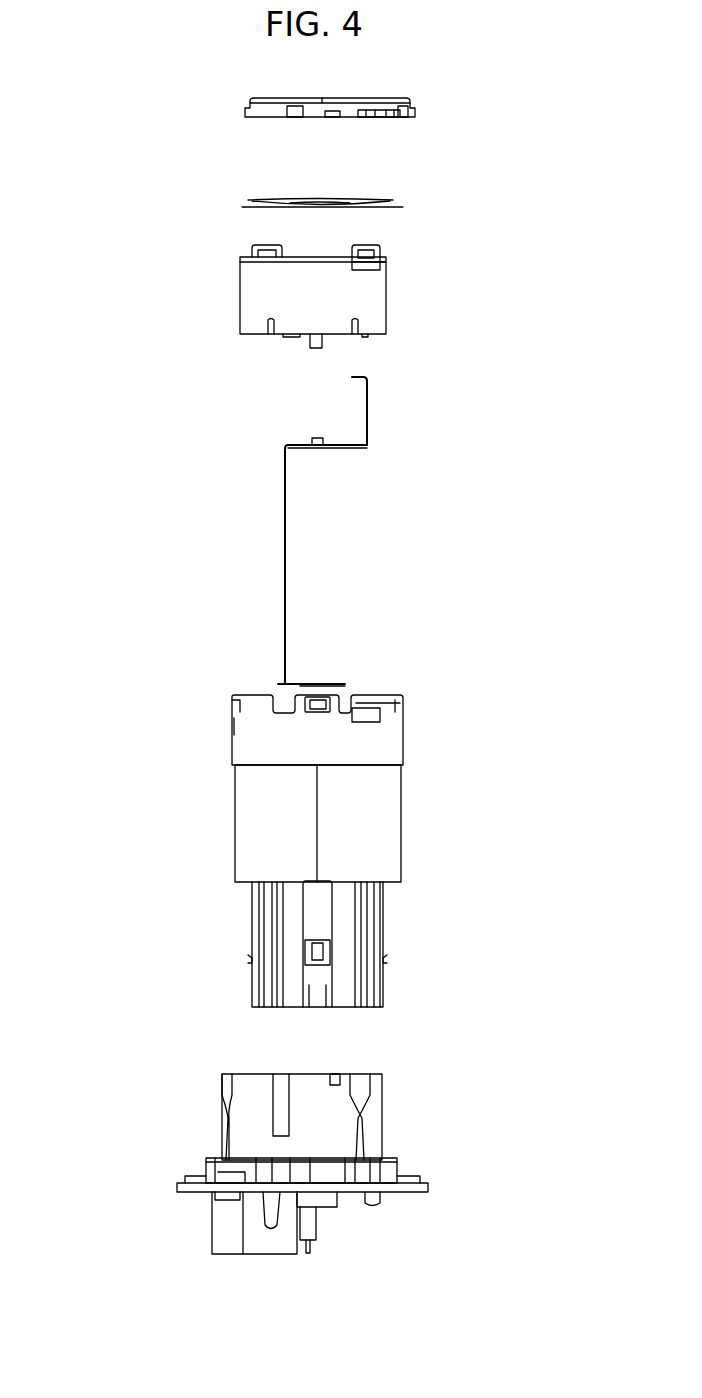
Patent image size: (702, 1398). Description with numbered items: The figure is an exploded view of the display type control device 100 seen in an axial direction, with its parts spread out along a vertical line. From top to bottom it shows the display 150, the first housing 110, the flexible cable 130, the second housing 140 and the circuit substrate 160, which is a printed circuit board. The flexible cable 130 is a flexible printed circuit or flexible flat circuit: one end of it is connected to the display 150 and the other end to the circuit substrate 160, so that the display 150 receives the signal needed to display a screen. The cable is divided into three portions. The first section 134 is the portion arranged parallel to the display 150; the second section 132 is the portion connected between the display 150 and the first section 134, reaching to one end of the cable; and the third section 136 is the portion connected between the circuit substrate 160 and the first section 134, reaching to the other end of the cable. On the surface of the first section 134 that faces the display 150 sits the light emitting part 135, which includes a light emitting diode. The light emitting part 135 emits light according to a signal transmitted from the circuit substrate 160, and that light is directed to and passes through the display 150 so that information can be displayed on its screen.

The display type control device 100 is at (119, 40).
The display 150 is at (188, 206).
The first housing 110 is at (188, 297).
The flexible cable 130 is at (188, 565).
The second section 132 is at (368, 419).
The first section 134 is at (360, 448).
The third section 136 is at (283, 508).
The light emitting part 135 is at (312, 437).
The second housing 140 is at (188, 819).
The circuit substrate 160 is at (163, 1188).